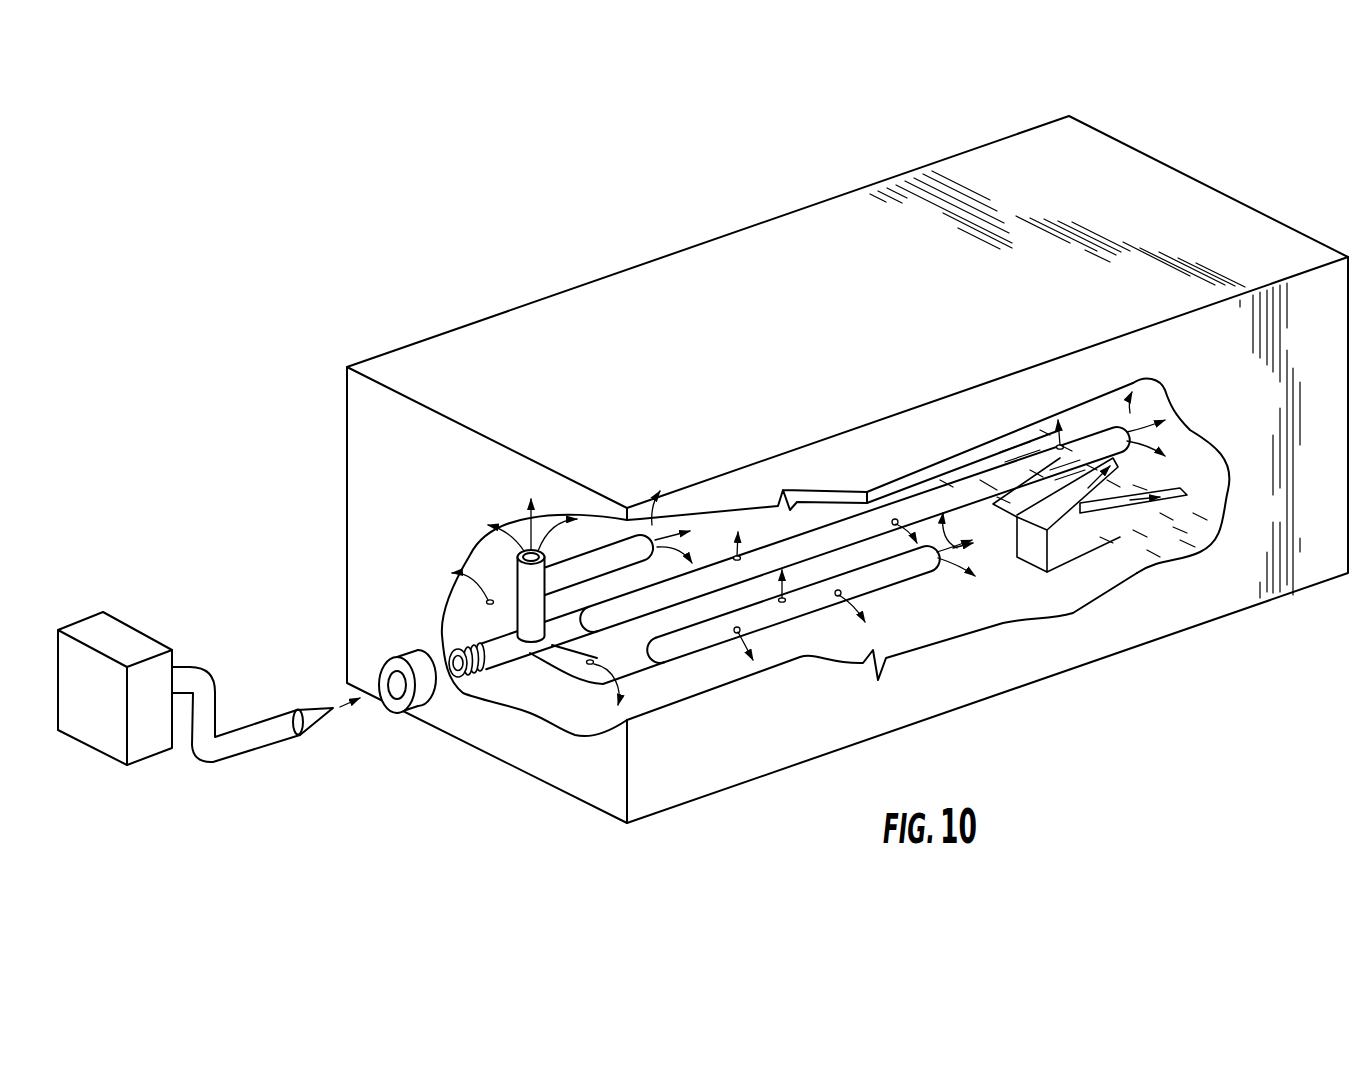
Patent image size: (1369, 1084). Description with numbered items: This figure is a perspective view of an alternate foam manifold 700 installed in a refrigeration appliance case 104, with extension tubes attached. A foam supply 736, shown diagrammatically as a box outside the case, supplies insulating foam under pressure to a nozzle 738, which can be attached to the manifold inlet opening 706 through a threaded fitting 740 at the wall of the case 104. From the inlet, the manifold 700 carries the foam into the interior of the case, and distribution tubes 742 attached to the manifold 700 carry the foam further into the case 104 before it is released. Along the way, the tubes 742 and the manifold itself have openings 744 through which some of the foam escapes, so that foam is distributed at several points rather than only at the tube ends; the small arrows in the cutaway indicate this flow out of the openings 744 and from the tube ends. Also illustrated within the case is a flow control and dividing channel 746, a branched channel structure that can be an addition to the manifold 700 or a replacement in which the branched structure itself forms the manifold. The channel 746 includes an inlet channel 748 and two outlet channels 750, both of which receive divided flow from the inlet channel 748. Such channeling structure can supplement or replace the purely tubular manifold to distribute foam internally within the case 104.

The appliance case 104 is at (621, 243).
The manifold 700 is at (808, 563).
The manifold inlet opening 706 is at (457, 678).
The foam supply 736 is at (117, 637).
The nozzle 738 is at (313, 708).
The threaded fitting 740 is at (420, 708).
The distribution tubes 742 is at (528, 576).
The openings 744 is at (487, 603).
The flow control and dividing channel 746 is at (1137, 605).
The inlet channel 748 is at (1032, 560).
The outlet channels 750 is at (1048, 490).